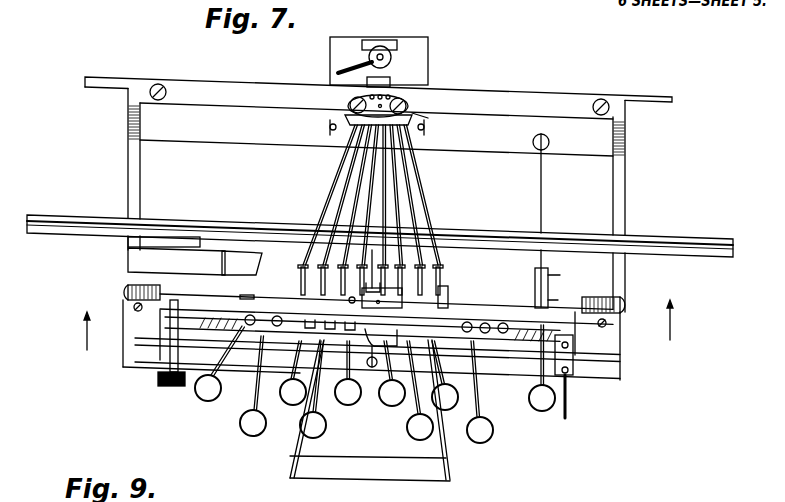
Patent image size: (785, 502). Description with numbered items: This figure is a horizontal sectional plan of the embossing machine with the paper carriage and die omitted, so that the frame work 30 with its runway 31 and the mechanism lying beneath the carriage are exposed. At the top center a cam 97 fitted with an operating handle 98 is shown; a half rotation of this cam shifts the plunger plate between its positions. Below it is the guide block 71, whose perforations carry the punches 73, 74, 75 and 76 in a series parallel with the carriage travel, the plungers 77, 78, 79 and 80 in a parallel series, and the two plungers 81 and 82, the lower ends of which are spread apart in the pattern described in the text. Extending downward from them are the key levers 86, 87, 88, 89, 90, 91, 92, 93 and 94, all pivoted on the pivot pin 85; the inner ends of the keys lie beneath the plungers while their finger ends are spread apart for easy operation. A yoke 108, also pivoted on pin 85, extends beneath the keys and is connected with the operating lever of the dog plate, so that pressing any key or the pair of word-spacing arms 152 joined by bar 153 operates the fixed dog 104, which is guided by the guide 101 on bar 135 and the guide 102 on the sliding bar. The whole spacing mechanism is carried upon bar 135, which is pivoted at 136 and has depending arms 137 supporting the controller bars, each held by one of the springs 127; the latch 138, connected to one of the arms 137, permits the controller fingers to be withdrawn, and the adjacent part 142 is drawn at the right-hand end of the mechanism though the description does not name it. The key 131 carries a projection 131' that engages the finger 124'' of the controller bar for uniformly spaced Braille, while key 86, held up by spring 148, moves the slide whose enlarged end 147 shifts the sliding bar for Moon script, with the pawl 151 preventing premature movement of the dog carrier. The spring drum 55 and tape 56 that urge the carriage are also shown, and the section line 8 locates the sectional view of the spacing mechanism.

The frame work 30 is at (128, 135).
The runway 31 is at (50, 222).
The operating handle 98 is at (355, 37).
The cam 97 is at (389, 56).
The punch 74 is at (340, 70).
The punch 73 is at (368, 94).
The punch 75 is at (383, 96).
The punch 76 is at (390, 99).
The plunger 79 is at (392, 106).
The plunger 80 is at (404, 103).
The plunger 77 is at (352, 101).
The plunger 78 is at (345, 116).
The plunger 81 is at (330, 125).
The pivot pin 85 is at (423, 133).
The plunger 82 is at (420, 114).
The guide block 71 is at (352, 124).
The yoke 108 is at (441, 286).
The guide 101 is at (410, 300).
The fixed dog 104 is at (378, 288).
The guide 102 is at (362, 289).
The bar 135 is at (168, 309).
The springs 127 is at (503, 334).
The depending arms 137 is at (168, 340).
The spring 148 is at (178, 382).
The bracket 142 is at (570, 372).
The latch 138 is at (565, 418).
The pivot 136 is at (118, 293).
The spring drum 55 is at (128, 269).
The tape 56 is at (242, 263).
The enlarged end 147 is at (247, 295).
The section line 8 8 is at (379, 325).
The key 131 is at (561, 295).
The projection 131' is at (565, 265).
The finger 124'' is at (570, 287).
The key 86 is at (208, 402).
The key lever 87 is at (245, 434).
The key lever 88 is at (290, 405).
The key lever 89 is at (324, 430).
The key lever 90 is at (349, 405).
The pawl 151 is at (373, 370).
The key lever 91 is at (393, 406).
The key lever 92 is at (410, 437).
The key lever 93 is at (443, 411).
The key lever 94 is at (490, 438).
The arms 152 is at (292, 450).
The bar 153 is at (370, 468).